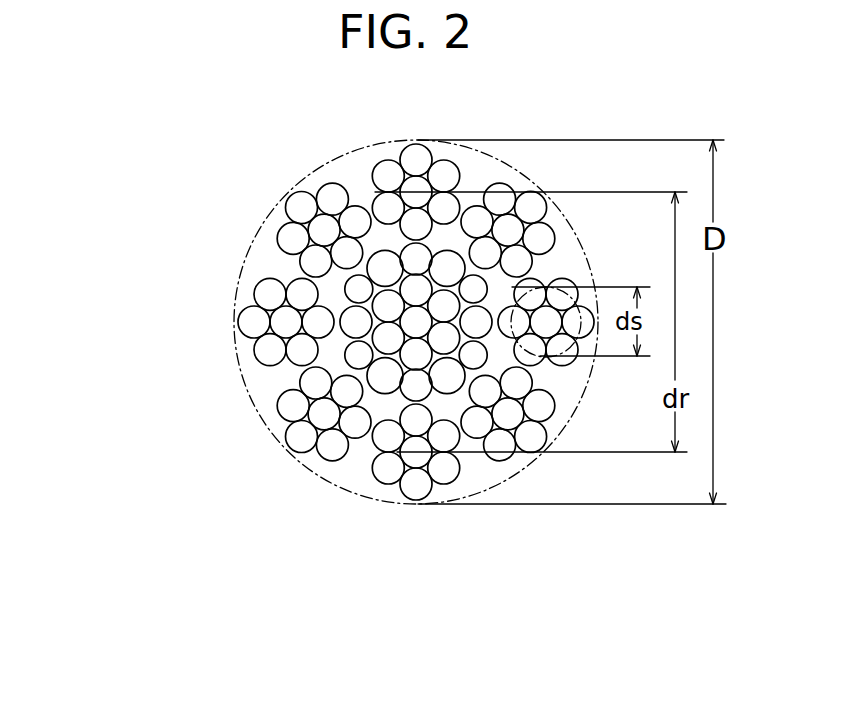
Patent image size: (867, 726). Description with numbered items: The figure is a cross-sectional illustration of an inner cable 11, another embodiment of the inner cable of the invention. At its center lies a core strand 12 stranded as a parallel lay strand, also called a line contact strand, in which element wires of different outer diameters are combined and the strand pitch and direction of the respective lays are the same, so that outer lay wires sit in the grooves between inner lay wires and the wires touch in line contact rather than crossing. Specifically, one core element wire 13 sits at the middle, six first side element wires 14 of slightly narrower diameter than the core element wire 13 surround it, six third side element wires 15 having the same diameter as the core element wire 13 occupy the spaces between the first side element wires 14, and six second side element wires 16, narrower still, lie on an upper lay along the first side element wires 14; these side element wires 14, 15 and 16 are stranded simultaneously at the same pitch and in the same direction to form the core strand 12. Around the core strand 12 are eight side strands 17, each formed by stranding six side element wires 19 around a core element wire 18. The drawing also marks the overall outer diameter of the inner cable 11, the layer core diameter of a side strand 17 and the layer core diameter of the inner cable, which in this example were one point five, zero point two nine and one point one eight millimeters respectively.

The inner cable 11 is at (331, 371).
The core strand 12 is at (334, 432).
The core element wire 13 is at (413, 321).
The first side element wires 14 is at (414, 353).
The third side element wires 15 is at (383, 375).
The second side element wires 16 is at (414, 389).
The side strand 17 is at (260, 199).
The core element wire 18 is at (298, 193).
The side element wires 19 is at (287, 243).